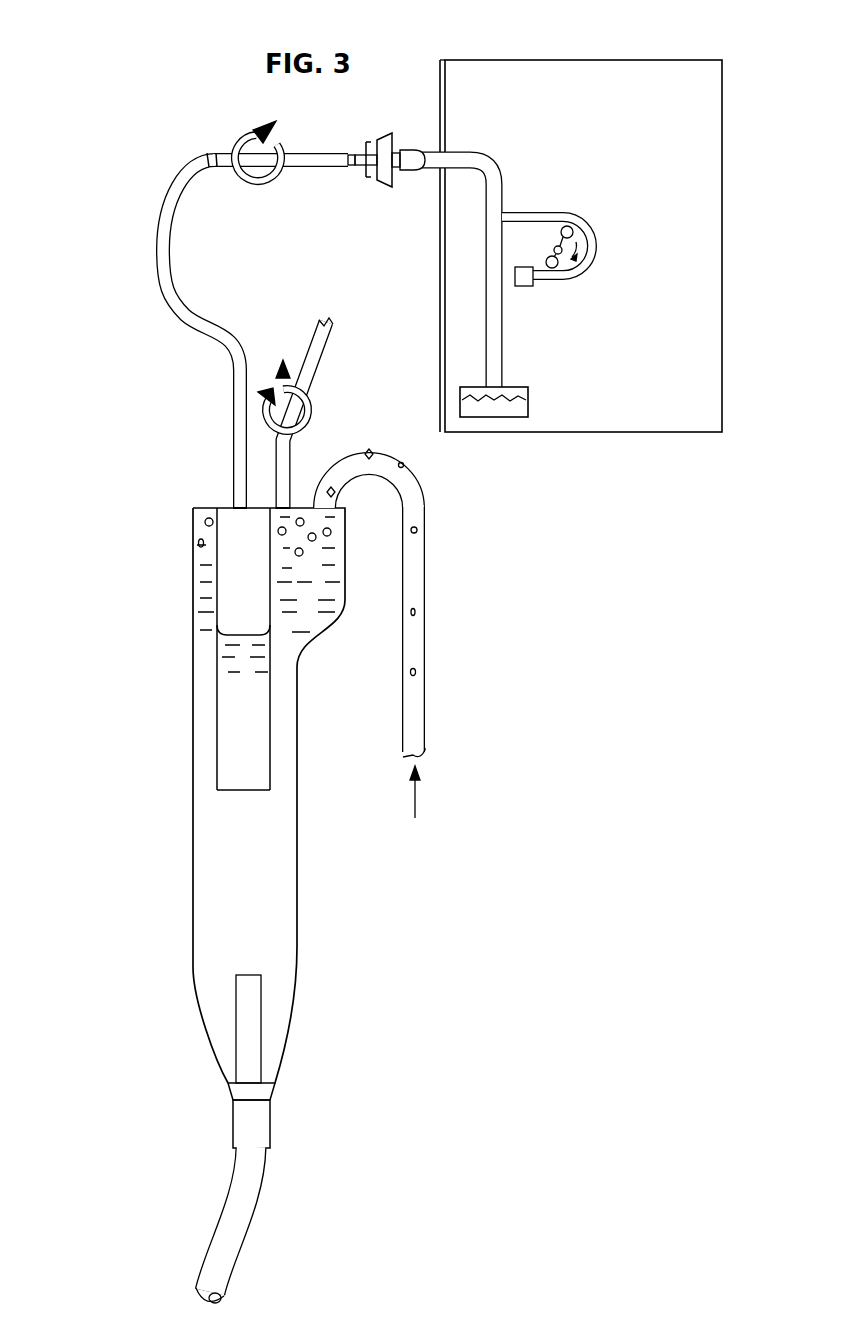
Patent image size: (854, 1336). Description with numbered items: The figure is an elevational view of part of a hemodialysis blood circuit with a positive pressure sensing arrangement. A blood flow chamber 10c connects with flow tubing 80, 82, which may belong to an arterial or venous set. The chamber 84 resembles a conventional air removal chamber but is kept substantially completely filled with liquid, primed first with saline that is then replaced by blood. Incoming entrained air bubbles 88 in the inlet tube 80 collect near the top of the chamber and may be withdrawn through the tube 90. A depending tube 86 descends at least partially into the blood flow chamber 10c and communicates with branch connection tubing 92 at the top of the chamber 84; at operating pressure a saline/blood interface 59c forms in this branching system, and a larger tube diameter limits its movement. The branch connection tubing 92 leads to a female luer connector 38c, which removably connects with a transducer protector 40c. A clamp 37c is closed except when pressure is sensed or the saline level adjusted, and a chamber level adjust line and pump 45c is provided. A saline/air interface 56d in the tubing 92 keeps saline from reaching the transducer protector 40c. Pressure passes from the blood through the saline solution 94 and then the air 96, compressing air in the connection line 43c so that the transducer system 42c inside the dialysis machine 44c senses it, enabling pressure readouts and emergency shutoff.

The blood flow chamber 10c is at (299, 693).
The clamp 37c is at (247, 147).
The female luer connector 38c is at (357, 150).
The transducer protector 40c is at (387, 188).
The transducer system 42c is at (518, 408).
The connection line 43c is at (500, 312).
The dialysis machine 44c is at (447, 140).
The chamber level adjust line and pump 45c is at (540, 215).
The saline/air interface 56d is at (210, 172).
The saline/blood interface 59c is at (245, 635).
The inlet tube 80 is at (418, 653).
The flow tubing 82 is at (248, 1218).
The chamber 84 is at (215, 845).
The depending tube 86 is at (240, 702).
The entrained air bubbles 88 is at (330, 532).
The tube 90 is at (310, 358).
The branch connection tubing 92 is at (170, 270).
The saline solution 94 is at (172, 203).
The air 96 is at (280, 134).